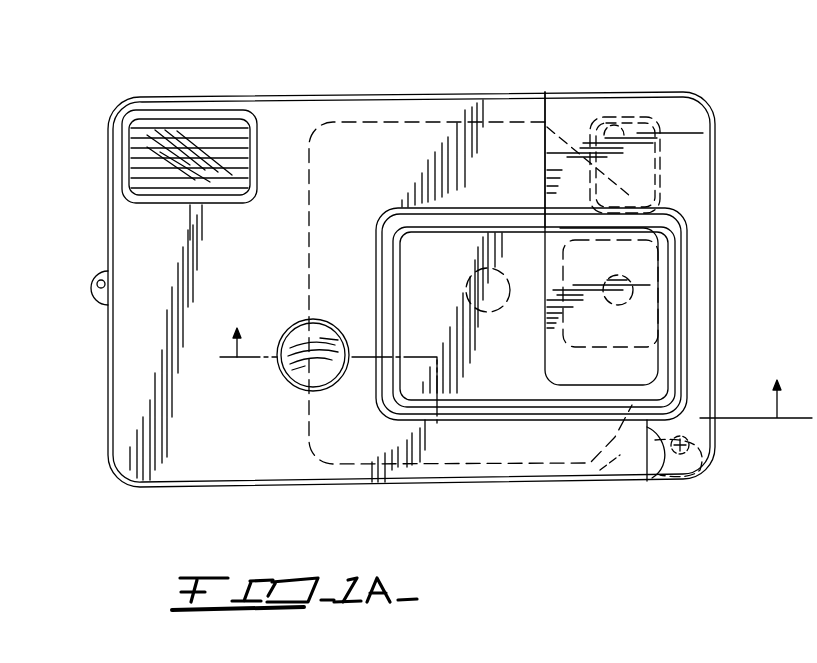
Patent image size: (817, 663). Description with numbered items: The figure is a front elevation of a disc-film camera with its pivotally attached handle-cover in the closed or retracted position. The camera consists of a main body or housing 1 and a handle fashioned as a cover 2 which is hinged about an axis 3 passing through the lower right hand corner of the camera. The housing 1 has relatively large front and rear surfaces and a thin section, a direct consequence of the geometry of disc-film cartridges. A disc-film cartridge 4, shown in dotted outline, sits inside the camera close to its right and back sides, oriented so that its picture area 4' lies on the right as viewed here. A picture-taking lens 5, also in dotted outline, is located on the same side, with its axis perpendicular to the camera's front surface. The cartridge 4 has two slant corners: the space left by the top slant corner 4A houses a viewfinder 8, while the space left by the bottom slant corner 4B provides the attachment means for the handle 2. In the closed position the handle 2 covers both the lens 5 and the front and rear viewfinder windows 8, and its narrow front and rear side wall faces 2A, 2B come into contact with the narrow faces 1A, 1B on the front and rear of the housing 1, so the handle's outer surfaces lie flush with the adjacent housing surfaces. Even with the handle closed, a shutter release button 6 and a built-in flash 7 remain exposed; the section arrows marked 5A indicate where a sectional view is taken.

The main body or housing 1 is at (130, 365).
The narrow face on the front of the housing 1A is at (647, 440).
The narrow face on the rear of the housing 1B is at (545, 113).
The handle-cover 2 is at (713, 302).
The front handle side wall face 2A is at (665, 472).
The rear handle side wall face 2B is at (545, 113).
The axis 3 is at (692, 442).
The disc-film cartridge 4 is at (470, 255).
The picture area 4' is at (610, 311).
The top slant corner 4A is at (590, 120).
The bottom slant corner 4B is at (618, 468).
The picture-taking lens 5 is at (632, 282).
The section line 5A is at (509, 384).
The shutter release button 6 is at (300, 366).
The built-in flash 7 is at (172, 135).
The viewfinder 8 is at (640, 130).